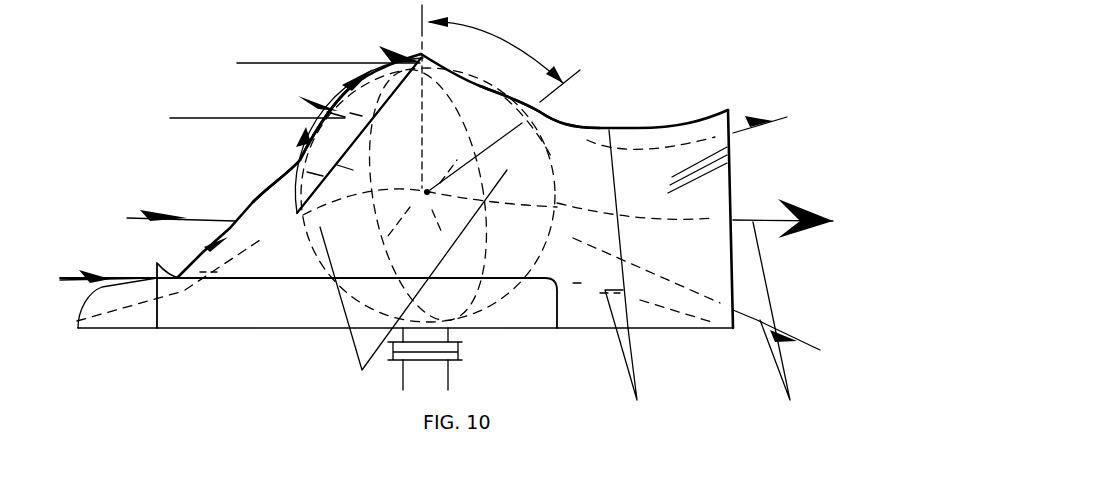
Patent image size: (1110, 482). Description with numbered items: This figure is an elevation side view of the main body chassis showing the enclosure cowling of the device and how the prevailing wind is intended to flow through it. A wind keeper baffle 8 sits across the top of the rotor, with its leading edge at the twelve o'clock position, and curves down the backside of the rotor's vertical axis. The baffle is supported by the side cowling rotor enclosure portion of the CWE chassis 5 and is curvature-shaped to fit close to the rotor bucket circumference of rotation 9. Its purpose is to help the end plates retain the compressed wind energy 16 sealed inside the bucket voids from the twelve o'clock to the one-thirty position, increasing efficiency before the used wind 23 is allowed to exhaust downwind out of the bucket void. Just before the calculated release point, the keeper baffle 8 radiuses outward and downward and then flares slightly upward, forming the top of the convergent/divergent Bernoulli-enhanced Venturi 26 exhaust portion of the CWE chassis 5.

The CWE chassis 5 is at (362, 370).
The wind keeper baffle 8 is at (505, 86).
The rotor bucket circumference of rotation 9 is at (293, 158).
The compressed wind energy 16 is at (283, 118).
The used wind 23 is at (790, 400).
The Bernoulli-enhanced Venturi 26 is at (637, 400).